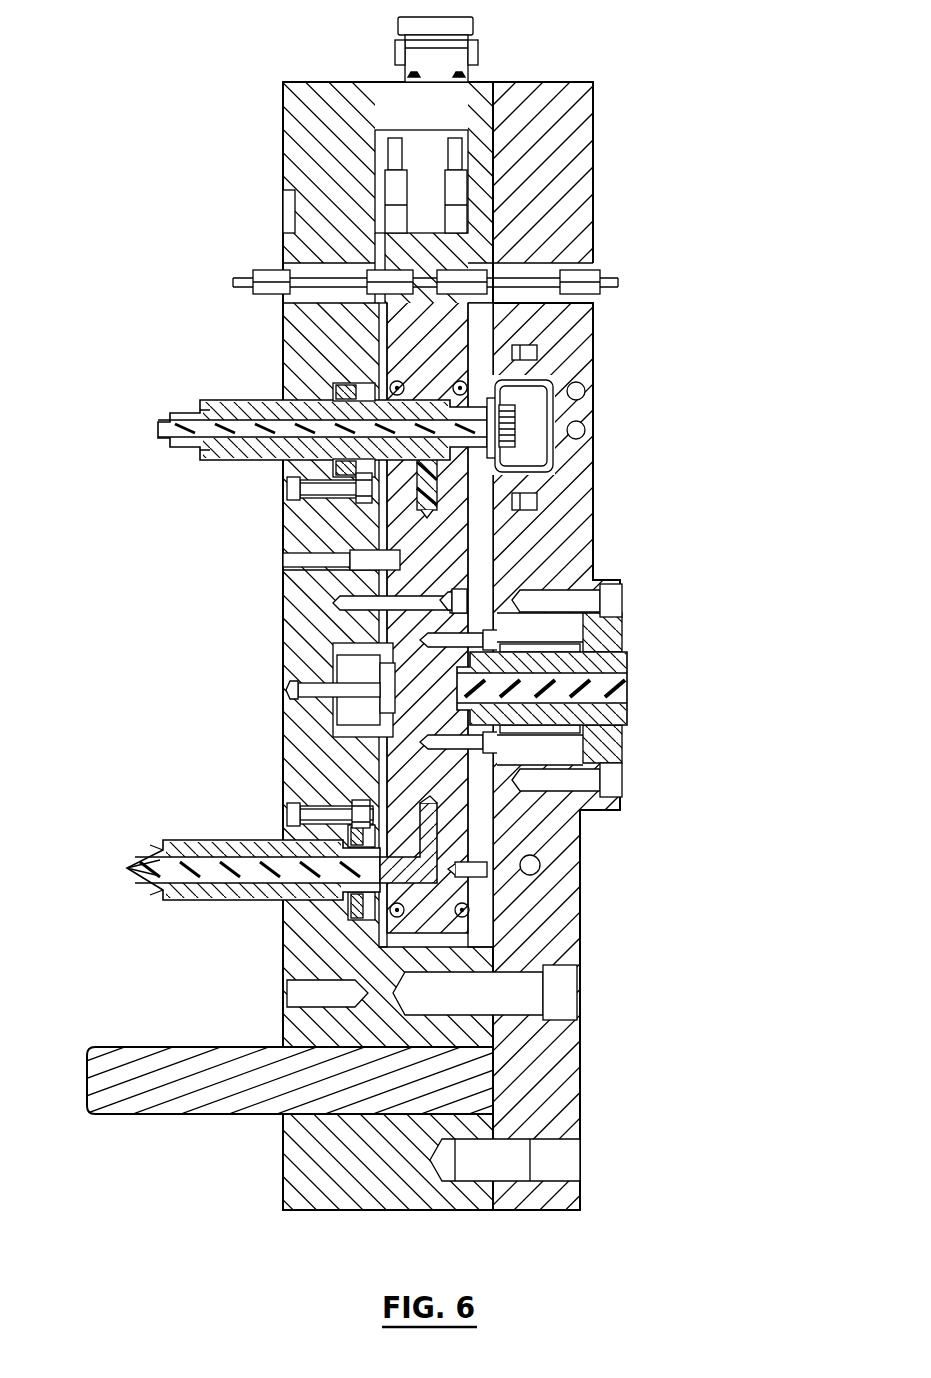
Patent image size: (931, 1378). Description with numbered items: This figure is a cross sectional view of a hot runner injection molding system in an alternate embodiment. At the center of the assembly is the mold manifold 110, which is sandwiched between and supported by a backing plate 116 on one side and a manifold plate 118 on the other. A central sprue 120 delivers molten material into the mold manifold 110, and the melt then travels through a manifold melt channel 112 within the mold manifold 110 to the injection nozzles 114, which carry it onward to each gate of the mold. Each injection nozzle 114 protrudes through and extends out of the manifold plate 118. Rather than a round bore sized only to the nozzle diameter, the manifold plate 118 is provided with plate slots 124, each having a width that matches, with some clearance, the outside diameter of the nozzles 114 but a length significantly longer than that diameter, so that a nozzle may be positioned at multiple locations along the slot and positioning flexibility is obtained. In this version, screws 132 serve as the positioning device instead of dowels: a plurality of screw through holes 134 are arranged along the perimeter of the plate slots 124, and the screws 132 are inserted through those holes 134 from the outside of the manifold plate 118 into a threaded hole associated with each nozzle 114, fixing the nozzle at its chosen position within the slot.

The mold manifold 110 is at (445, 333).
The manifold melt channel 112 is at (452, 491).
The injection nozzle 114 is at (160, 432).
The backing plate 116 is at (578, 159).
The manifold plate 118 is at (290, 597).
The central sprue 120 is at (638, 665).
The plate slot 124 is at (284, 399).
The screw 132 is at (292, 502).
The screw through hole 134 is at (356, 500).